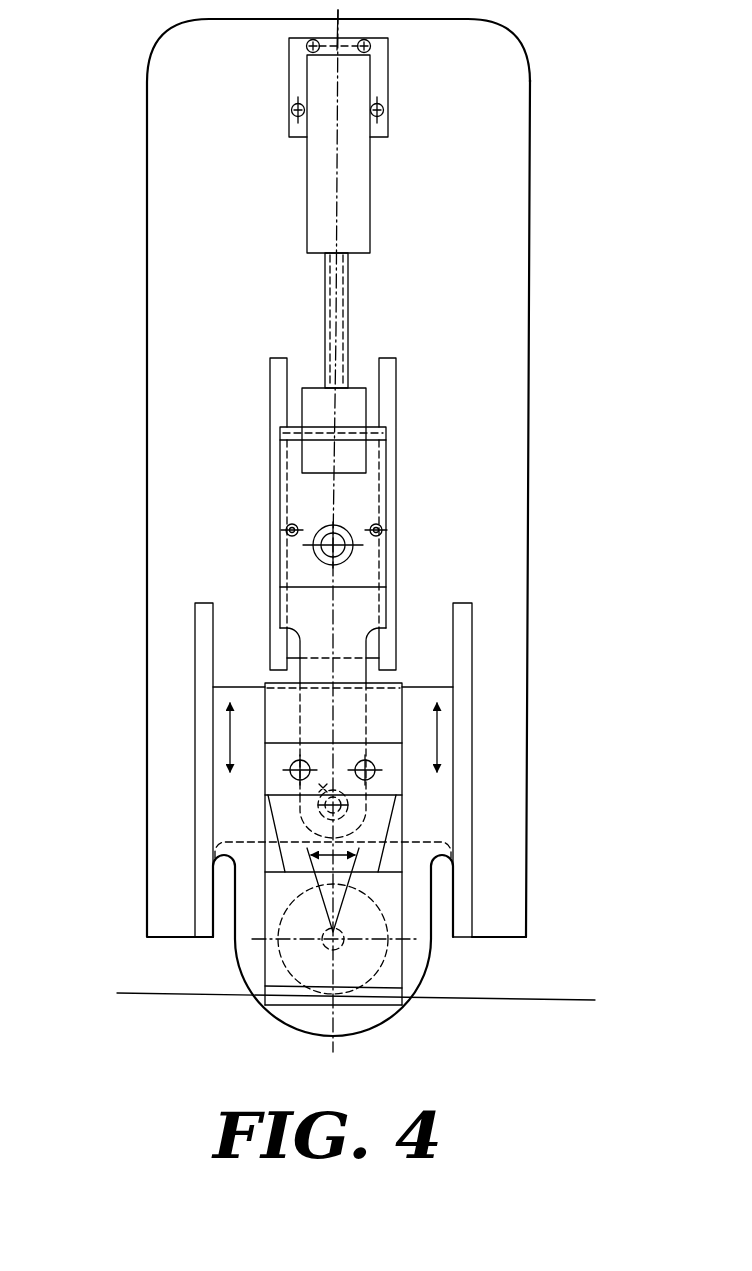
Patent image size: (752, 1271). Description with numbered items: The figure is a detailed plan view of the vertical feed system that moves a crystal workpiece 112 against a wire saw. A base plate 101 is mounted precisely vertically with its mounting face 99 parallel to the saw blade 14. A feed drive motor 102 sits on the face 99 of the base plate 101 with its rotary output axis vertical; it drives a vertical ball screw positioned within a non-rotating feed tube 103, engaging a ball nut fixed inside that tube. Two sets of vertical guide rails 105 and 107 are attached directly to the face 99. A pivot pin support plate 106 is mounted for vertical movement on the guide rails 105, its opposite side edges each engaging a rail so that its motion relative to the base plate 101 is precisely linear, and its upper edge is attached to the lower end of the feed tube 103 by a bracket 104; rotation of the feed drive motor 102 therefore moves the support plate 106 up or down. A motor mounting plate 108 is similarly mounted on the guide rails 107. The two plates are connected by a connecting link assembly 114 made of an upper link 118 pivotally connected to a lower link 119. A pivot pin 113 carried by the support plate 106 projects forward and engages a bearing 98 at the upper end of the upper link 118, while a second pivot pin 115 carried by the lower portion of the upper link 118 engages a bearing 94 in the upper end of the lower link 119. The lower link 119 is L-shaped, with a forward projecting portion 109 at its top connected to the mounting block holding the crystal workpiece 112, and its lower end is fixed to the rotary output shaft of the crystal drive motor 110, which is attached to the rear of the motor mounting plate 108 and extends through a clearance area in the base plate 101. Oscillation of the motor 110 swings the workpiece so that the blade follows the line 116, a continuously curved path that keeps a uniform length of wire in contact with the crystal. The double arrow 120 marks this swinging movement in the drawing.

The saw blade 14 is at (140, 993).
The bearing 94 is at (325, 782).
The bearing 98 is at (328, 526).
The mounting face 99 is at (516, 370).
The base plate 101 is at (531, 183).
The feed drive motor 102 is at (371, 84).
The feed tube 103 is at (349, 290).
The bracket 104 is at (318, 406).
The guide rails 105 is at (270, 453).
The pivot pin support plate 106 is at (283, 646).
The guide rails 107 is at (195, 648).
The motor mounting plate 108 is at (238, 787).
The forward projecting portion 109 is at (262, 752).
The crystal drive motor 110 is at (276, 921).
The crystal workpiece 112 is at (290, 1010).
The pivot pin 113 is at (345, 531).
The connecting link assembly 114 is at (389, 614).
The second pivot pin 115 is at (350, 800).
The line 116 is at (386, 1005).
The upper link 118 is at (370, 570).
The lower link 119 is at (383, 814).
The steering pivot indicator 120 is at (318, 846).